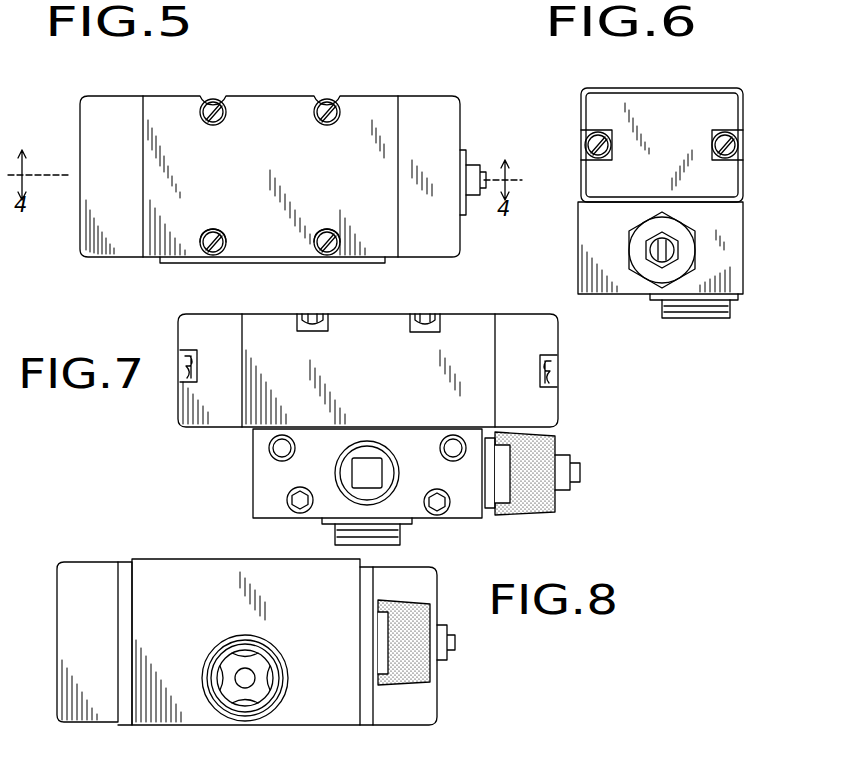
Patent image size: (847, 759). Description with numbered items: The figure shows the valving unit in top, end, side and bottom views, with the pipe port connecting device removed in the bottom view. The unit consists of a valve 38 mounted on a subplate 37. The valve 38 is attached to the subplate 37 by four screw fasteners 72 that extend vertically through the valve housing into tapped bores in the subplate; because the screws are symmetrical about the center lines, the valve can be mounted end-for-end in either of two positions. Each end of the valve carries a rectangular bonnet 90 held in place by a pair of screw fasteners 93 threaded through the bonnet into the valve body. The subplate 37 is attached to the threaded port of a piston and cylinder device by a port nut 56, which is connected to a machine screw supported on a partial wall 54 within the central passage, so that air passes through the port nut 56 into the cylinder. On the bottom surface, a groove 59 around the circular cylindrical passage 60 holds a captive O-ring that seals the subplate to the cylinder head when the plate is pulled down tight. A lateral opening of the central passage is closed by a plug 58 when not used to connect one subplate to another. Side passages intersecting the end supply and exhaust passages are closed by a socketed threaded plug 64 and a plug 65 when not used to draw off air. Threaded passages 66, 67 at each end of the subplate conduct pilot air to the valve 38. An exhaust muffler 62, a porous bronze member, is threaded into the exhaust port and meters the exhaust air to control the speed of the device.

In FIG. 6, the subplate 37 is at (568, 250).
In FIG. 7, the subplate 37 is at (243, 479).
In FIG. 8, the subplate 37 is at (208, 604).
In FIG. 5, the valve 38 is at (290, 160).
In FIG. 6, the valve 38 is at (572, 103).
In FIG. 7, the valve 38 is at (362, 374).
In FIG. 8, the valve 38 is at (93, 552).
In FIG. 8, the partial wall 54 is at (206, 670).
In FIG. 6, the port nut 56 is at (730, 312).
In FIG. 7, the port nut 56 is at (327, 544).
In FIG. 7, the plug 58 is at (372, 442).
In FIG. 8, the groove 59 is at (275, 660).
In FIG. 8, the circular cylindrical passage 60 is at (270, 694).
In FIG. 5, the exhaust muffler 62 is at (466, 152).
In FIG. 6, the exhaust muffler 62 is at (645, 282).
In FIG. 7, the exhaust muffler 62 is at (540, 516).
In FIG. 8, the exhaust muffler 62 is at (428, 666).
In FIG. 7, the socketed threaded plug 64 is at (440, 515).
In FIG. 7, the plug 65 is at (294, 508).
In FIG. 7, the threaded passage 66 is at (442, 446).
In FIG. 7, the threaded passage 67 is at (268, 452).
In FIG. 5, the screw fasteners 72 is at (207, 100).
In FIG. 7, the screw fasteners 72 is at (330, 318).
In FIG. 5, the bonnet 90 is at (124, 80).
In FIG. 6, the bonnet 90 is at (690, 106).
In FIG. 7, the bonnet 90 is at (180, 326).
In FIG. 8, the bonnet 90 is at (58, 612).
In FIG. 6, the screw fasteners 93 is at (583, 146).
In FIG. 7, the screw fasteners 93 is at (560, 368).